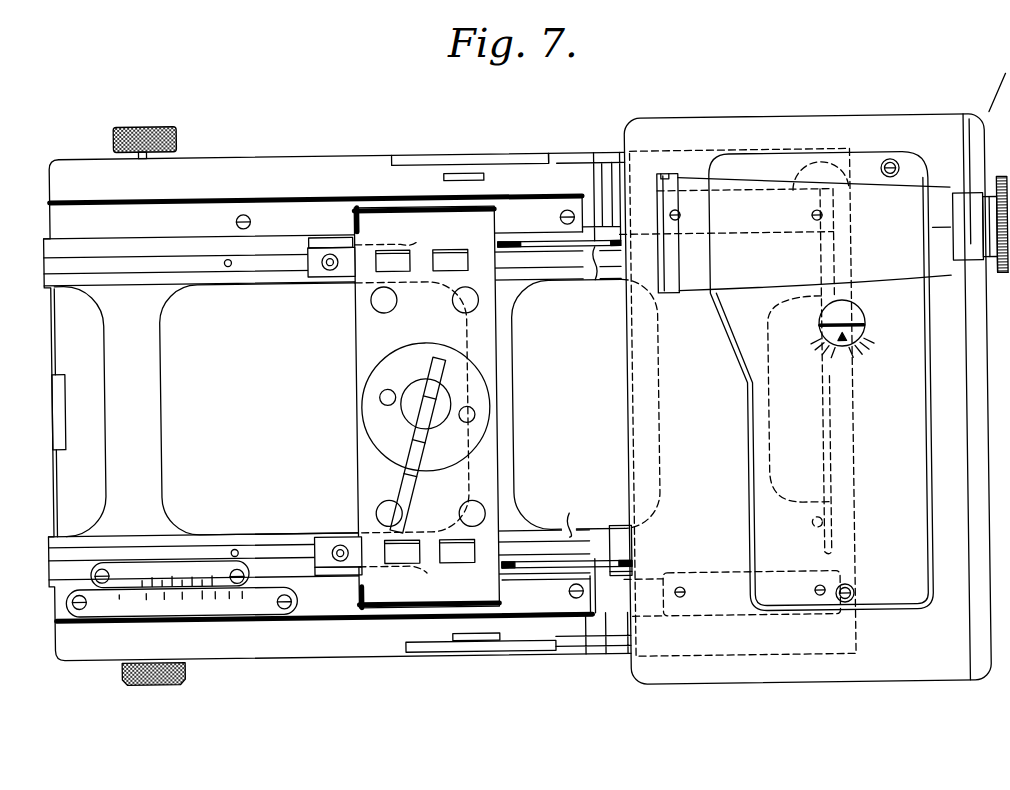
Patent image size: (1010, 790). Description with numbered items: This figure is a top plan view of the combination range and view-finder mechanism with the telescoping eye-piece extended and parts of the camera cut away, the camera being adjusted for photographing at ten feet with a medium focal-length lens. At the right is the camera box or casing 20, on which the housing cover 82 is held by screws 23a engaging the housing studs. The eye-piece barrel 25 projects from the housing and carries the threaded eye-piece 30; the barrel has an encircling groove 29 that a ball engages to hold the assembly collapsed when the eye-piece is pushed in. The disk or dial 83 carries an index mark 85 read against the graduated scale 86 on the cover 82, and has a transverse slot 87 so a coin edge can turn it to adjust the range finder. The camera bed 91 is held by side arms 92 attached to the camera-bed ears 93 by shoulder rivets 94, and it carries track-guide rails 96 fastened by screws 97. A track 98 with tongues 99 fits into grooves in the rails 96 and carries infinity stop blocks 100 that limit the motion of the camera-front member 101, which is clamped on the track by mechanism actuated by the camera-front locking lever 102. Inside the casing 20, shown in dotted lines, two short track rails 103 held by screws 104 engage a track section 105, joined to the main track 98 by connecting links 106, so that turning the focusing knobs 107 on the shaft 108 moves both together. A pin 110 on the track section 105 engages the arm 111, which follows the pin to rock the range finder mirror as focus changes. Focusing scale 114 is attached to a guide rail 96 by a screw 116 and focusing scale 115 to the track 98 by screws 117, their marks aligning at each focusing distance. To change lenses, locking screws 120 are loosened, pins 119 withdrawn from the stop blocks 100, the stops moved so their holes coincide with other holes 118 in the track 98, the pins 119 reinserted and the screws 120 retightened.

The camera box or casing 20 is at (884, 677).
The screws 23a is at (898, 168).
The eye-piece barrel 25 is at (974, 253).
The encircling groove 29 is at (999, 274).
The threaded eye-piece 30 is at (1003, 192).
The housing cover 82 is at (912, 502).
The disk or dial 83 is at (851, 318).
The index mark 85 is at (848, 358).
The graduated scale 86 is at (828, 357).
The transverse slot 87 is at (821, 324).
The camera bed 91 is at (66, 472).
The side arms 92 is at (575, 168).
The camera-bed ears 93 is at (432, 166).
The shoulder rivets 94 is at (460, 177).
The track-guide rails 96 is at (203, 204).
The screws 97 is at (254, 218).
The track 98 is at (106, 338).
The tongues 99 is at (50, 231).
The infinity stop blocks 100 is at (317, 273).
The camera-front member 101 is at (363, 343).
The camera-front locking lever 102 is at (419, 492).
The short track rails 103 is at (731, 605).
The screws 104 is at (685, 217).
The track section 105 is at (629, 529).
The connecting links 106 is at (577, 674).
The focusing knobs 107 is at (164, 122).
The shaft 108 is at (158, 154).
The pin 110 is at (811, 531).
The arm 111 is at (822, 404).
The focusing scale 114 is at (260, 604).
The focusing scale 115 is at (123, 562).
The screw 116 is at (70, 597).
The screws 117 is at (98, 558).
The holes 118 is at (230, 264).
The pins 119 is at (335, 270).
The locking screws 120 is at (318, 571).